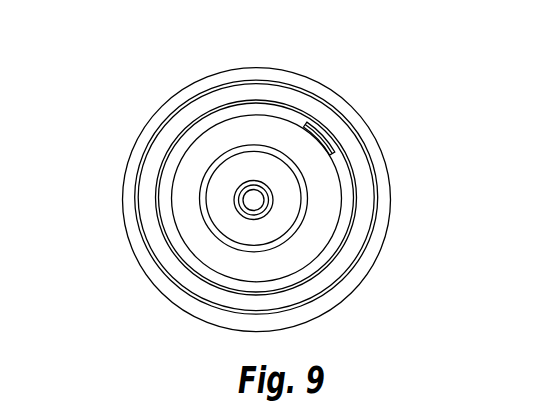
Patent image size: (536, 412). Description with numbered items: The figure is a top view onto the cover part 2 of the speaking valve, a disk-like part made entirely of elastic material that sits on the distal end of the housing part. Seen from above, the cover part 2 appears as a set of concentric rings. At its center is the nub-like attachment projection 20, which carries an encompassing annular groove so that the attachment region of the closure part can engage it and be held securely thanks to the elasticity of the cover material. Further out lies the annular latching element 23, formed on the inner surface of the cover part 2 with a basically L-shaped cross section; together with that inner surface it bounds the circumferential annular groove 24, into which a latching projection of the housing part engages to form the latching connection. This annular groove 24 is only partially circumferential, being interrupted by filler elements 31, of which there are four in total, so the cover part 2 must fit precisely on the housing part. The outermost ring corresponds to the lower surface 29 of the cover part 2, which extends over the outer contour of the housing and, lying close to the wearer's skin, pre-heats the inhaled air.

The cover part 2 is at (413, 109).
The attachment projection 20 is at (253, 205).
The latching element 23 is at (156, 217).
The annular groove 24 is at (347, 218).
The lower surface 29 is at (173, 100).
The filler element 31 is at (323, 137).